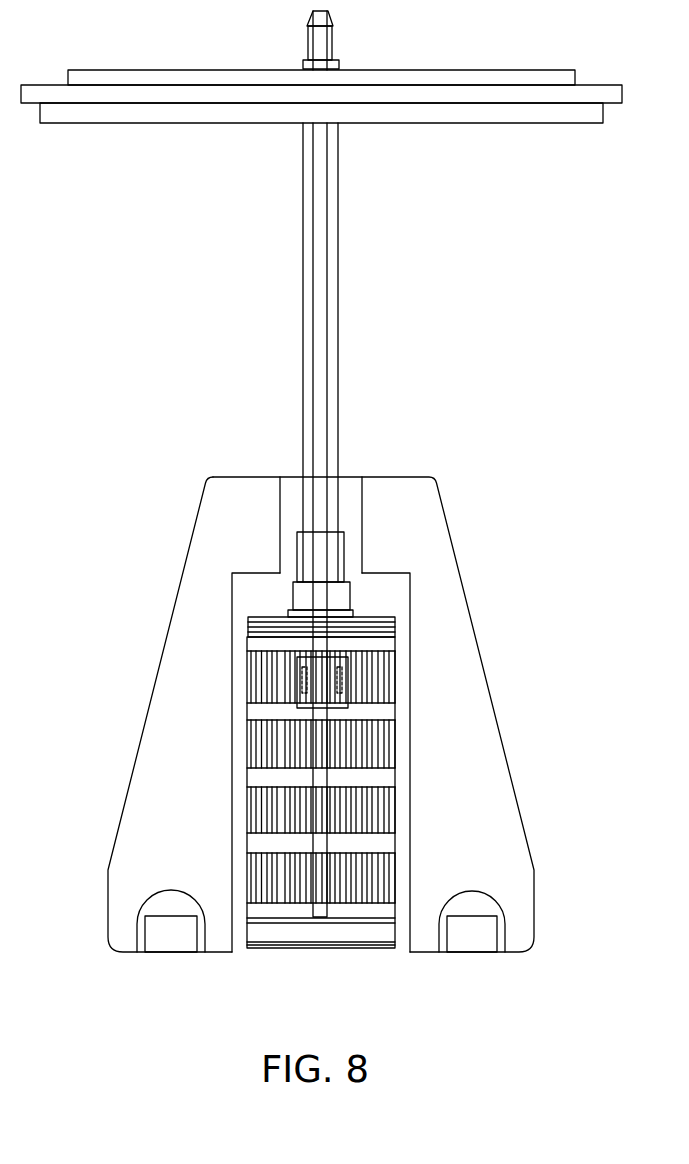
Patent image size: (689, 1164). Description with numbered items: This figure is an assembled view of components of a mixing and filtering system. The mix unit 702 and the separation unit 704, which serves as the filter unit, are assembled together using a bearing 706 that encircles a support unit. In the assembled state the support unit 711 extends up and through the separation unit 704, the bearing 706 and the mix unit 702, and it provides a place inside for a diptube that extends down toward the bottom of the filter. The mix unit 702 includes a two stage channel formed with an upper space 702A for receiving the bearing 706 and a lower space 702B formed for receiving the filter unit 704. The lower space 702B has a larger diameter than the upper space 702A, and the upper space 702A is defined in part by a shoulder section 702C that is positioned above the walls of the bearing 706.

The mix unit 702 is at (535, 910).
The upper space 702A is at (347, 501).
The lower space 702B is at (395, 593).
The shoulder section 702C is at (280, 502).
The separation unit 704 is at (395, 782).
The bearing 706 is at (345, 547).
The support unit 711 is at (338, 278).